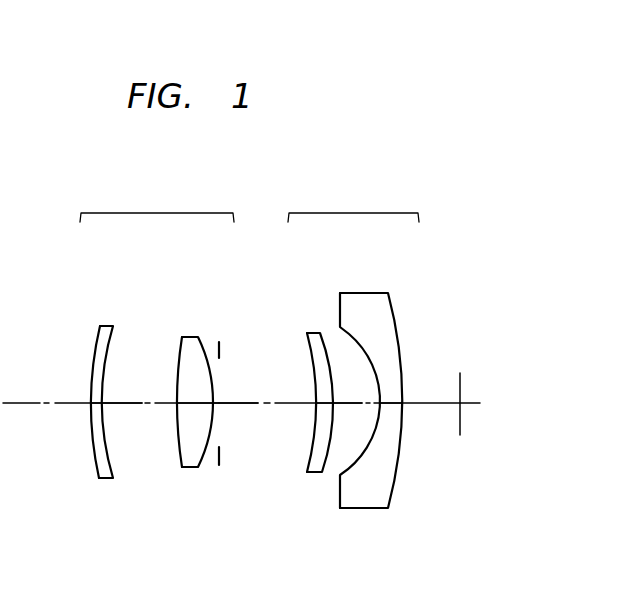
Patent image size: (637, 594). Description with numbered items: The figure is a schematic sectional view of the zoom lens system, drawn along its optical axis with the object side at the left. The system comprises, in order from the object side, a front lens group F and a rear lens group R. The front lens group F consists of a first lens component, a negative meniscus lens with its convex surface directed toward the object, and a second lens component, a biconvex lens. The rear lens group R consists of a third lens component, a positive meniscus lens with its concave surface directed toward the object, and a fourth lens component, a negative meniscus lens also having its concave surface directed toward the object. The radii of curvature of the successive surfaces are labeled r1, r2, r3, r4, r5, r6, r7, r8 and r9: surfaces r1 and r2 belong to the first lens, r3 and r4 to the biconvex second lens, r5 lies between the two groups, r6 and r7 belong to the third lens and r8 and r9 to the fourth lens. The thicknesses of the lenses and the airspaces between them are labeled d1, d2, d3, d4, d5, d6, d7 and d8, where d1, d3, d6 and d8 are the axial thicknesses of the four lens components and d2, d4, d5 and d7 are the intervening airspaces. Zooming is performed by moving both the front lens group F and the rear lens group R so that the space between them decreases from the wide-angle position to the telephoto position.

The front lens group F is at (157, 204).
The rear lens group R is at (353, 204).
The radius of curvature of lens surface r1 is at (99, 344).
The radius of curvature of lens surface r2 is at (113, 345).
The radius of curvature of lens surface r3 is at (177, 355).
The radius of curvature of lens surface r4 is at (208, 347).
The radius of curvature of lens surface r5 is at (220, 348).
The radius of curvature of lens surface r6 is at (307, 348).
The radius of curvature of lens surface r7 is at (327, 343).
The radius of curvature of lens surface r8 is at (348, 343).
The radius of curvature of lens surface r9 is at (395, 315).
The lens thickness d1 is at (93, 407).
The airspace d2 is at (134, 407).
The lens thickness d3 is at (193, 407).
The airspace d4 is at (215, 407).
The airspace d5 is at (255, 407).
The lens thickness d6 is at (323, 407).
The airspace d7 is at (357, 407).
The lens thickness d8 is at (389, 407).